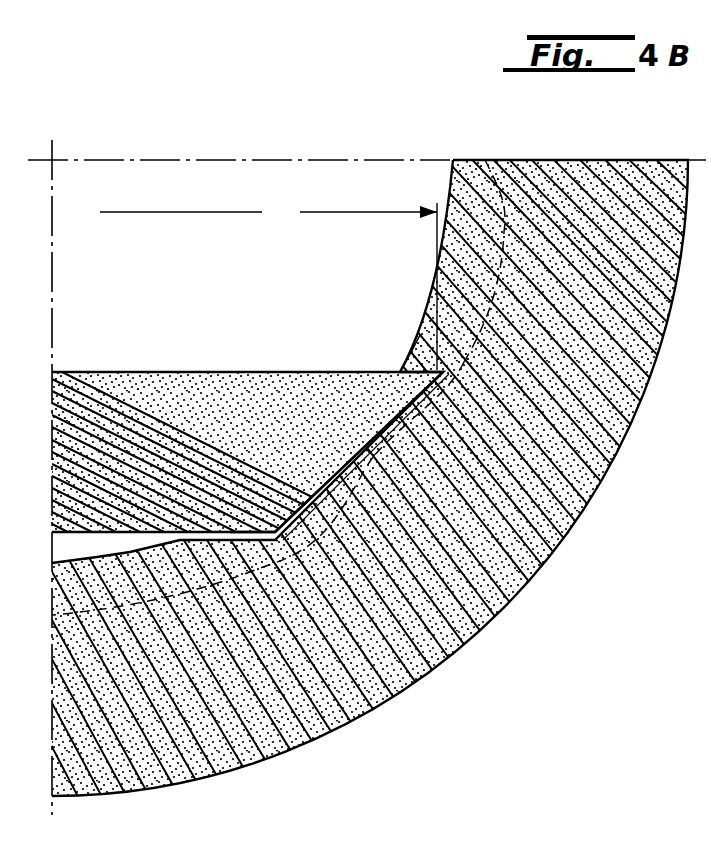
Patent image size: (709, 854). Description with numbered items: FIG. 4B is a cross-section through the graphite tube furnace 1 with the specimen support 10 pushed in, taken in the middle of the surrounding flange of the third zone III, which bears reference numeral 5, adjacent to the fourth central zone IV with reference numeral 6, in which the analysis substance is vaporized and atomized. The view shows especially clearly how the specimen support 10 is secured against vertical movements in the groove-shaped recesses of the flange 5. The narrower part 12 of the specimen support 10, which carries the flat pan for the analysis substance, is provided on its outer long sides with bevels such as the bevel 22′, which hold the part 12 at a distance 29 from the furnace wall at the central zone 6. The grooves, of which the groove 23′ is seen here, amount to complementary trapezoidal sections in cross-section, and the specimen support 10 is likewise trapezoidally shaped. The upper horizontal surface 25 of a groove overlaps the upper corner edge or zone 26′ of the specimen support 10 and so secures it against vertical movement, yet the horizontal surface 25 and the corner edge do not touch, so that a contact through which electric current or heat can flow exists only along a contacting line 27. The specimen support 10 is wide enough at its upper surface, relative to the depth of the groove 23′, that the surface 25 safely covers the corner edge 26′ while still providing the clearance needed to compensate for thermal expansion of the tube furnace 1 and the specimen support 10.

The graphite tube furnace 1 is at (527, 580).
The third zone III surrounding flange 5 is at (460, 190).
The fourth central zone IV 6 is at (535, 203).
The specimen support 10 is at (121, 370).
The narrower part 12 is at (268, 285).
The bevel 22′ is at (304, 492).
The groove 23′ is at (355, 496).
The upper horizontal surface 25 is at (421, 360).
The upper corner edge 26′ is at (396, 372).
The contacting line 27 is at (458, 402).
The distance 29 is at (366, 468).